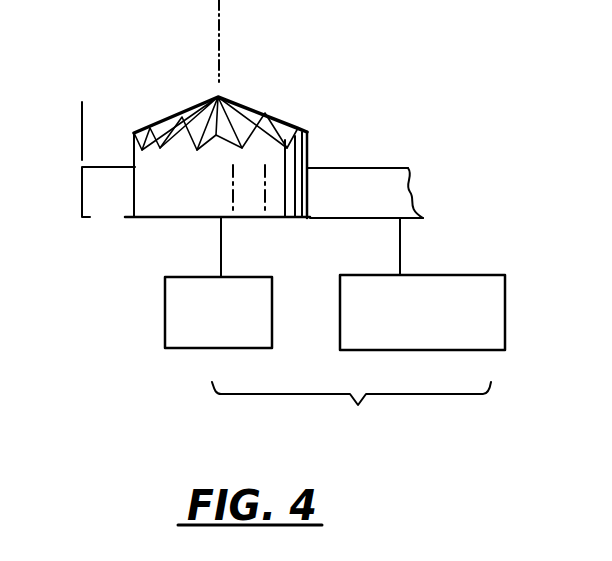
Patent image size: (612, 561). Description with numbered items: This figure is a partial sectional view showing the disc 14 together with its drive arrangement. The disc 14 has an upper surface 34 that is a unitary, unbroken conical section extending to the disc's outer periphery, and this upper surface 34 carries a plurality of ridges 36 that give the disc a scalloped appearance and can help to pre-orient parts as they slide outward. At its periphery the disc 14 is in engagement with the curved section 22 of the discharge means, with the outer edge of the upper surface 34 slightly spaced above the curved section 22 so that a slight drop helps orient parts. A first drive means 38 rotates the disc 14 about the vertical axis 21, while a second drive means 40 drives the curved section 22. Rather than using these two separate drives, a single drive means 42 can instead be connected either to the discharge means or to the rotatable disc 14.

The disc 14 is at (298, 158).
The vertical axis 21 is at (221, 21).
The curved section 22 is at (100, 167).
The upper surface 34 is at (287, 96).
The ridges 36 is at (175, 117).
The first drive means 38 is at (227, 348).
The second drive means 40 is at (425, 350).
The single drive means 42 is at (351, 410).